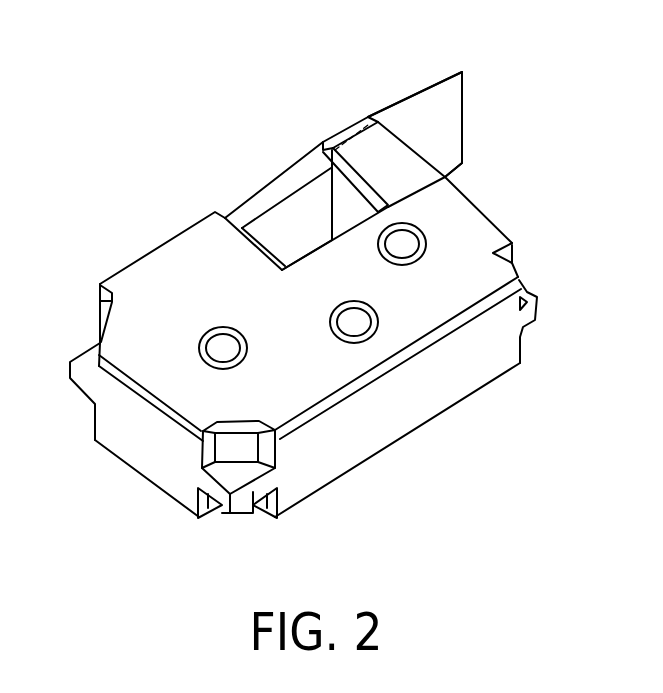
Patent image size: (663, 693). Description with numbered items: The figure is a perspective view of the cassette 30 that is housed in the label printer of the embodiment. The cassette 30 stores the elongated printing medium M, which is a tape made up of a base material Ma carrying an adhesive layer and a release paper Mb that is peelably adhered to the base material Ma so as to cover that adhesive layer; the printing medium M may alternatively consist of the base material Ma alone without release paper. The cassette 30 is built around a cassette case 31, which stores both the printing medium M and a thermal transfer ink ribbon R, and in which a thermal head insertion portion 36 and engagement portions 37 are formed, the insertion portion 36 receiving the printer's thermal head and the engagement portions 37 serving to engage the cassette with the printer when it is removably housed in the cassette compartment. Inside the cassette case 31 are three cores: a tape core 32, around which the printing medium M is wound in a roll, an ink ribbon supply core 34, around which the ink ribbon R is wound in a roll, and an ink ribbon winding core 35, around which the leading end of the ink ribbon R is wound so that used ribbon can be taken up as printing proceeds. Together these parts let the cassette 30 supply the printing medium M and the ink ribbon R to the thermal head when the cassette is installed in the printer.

The cassette 30 is at (530, 225).
The cassette case 31 is at (146, 277).
The tape core 32 is at (213, 352).
The ink ribbon supply core 34 is at (363, 320).
The ink ribbon winding core 35 is at (405, 242).
The thermal head insertion portion 36 is at (270, 216).
The engagement portions 37 is at (85, 352).
The ink ribbon R is at (307, 207).
The printing medium M is at (500, 25).
The base material Ma is at (438, 123).
The release paper Mb is at (440, 74).